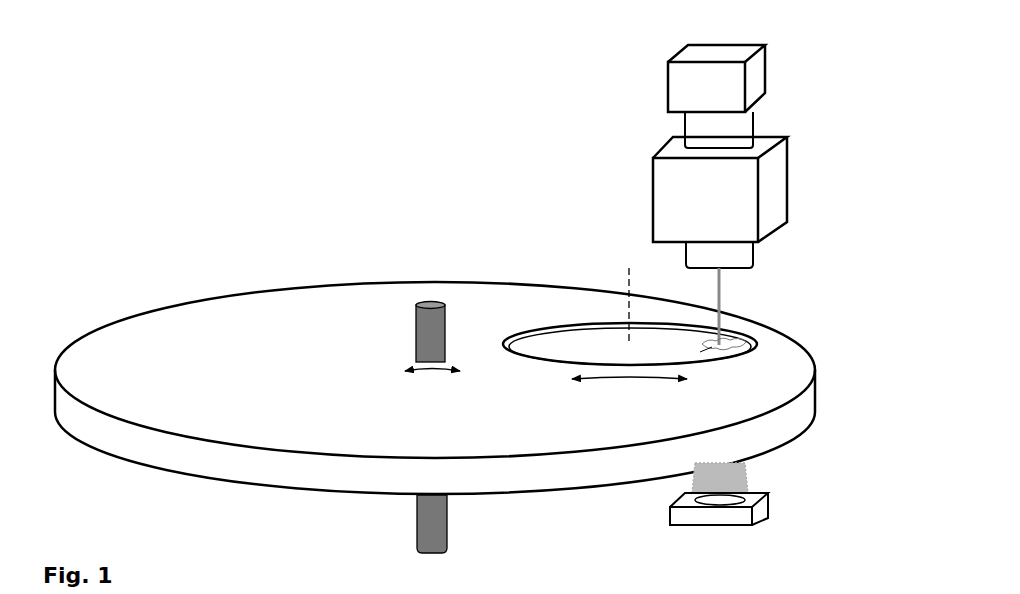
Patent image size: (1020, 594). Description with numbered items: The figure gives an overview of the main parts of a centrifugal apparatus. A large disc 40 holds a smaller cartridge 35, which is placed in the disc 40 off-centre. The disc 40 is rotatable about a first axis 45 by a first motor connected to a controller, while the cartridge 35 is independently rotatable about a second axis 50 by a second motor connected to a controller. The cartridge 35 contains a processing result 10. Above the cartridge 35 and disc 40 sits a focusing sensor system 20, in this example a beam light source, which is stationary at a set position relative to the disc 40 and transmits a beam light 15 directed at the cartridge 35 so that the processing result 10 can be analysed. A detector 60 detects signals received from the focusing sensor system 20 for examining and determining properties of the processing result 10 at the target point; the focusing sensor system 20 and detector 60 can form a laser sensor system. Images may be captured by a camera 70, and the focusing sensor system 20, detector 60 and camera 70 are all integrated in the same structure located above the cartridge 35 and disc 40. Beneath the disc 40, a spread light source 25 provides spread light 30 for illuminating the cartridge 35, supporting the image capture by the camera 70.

The processing result 10 is at (737, 338).
The beam light 15 is at (722, 298).
The focusing sensor system 20 is at (668, 193).
The spread light source 25 is at (760, 510).
The spread light 30 is at (750, 472).
The cartridge 35 is at (562, 347).
The disc 40 is at (248, 313).
The first axis 45 is at (423, 300).
The second axis 50 is at (627, 280).
The detector 60 is at (683, 80).
The camera 70 is at (682, 130).